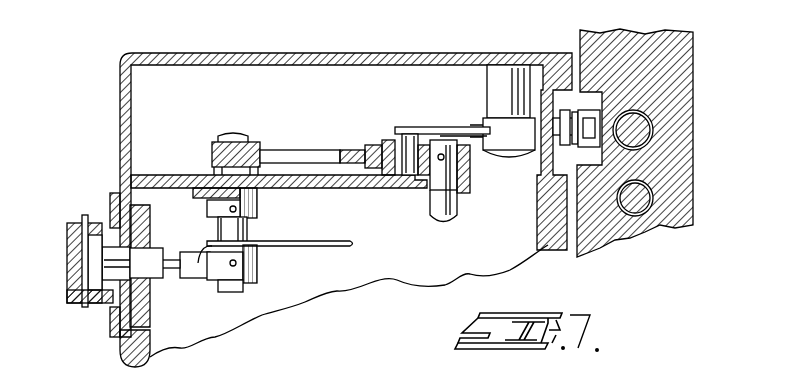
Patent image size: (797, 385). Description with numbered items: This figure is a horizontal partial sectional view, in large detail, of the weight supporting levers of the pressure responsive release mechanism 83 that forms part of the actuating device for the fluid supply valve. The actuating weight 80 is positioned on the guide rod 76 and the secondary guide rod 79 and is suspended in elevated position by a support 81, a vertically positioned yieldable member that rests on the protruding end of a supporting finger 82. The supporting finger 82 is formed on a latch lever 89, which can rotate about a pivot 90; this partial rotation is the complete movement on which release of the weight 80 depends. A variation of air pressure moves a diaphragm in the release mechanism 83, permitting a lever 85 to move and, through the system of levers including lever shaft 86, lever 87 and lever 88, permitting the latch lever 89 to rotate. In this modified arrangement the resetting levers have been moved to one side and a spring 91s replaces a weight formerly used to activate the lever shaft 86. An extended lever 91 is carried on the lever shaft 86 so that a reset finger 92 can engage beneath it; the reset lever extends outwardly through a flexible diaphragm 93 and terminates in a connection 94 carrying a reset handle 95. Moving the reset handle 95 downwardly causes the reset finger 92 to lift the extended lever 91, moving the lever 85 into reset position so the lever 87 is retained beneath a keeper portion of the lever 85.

The guide rod 76 is at (640, 128).
The secondary guide rod 79 is at (640, 200).
The actuating weight 80 is at (693, 158).
The support 81 is at (588, 138).
The supporting finger 82 is at (574, 119).
The pressure responsive release mechanism 83 is at (330, 62).
The lever 85 is at (248, 150).
The lever shaft 86 is at (228, 292).
The lever 87 is at (305, 160).
The lever 88 is at (411, 130).
The latch lever 89 is at (452, 128).
The pivot 90 is at (512, 152).
The extended lever 91 is at (212, 275).
The spring 91s is at (290, 247).
The reset finger 92 is at (175, 272).
The flexible diaphragm 93 is at (140, 294).
The connection 94 is at (82, 252).
The reset handle 95 is at (442, 222).